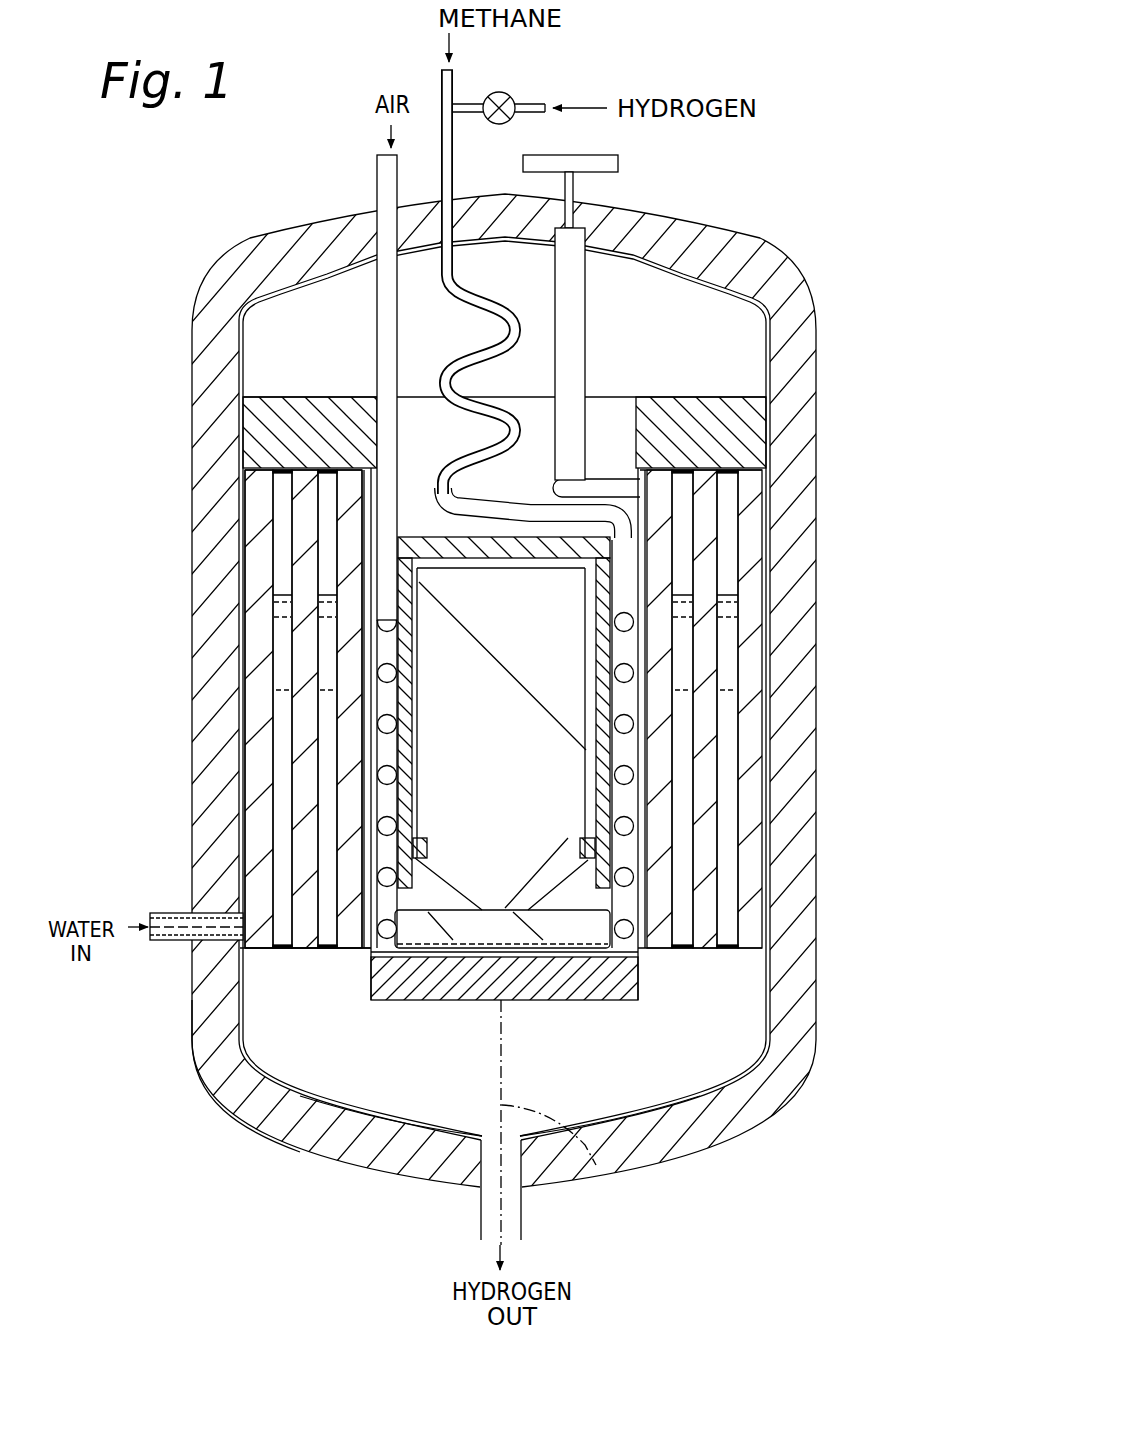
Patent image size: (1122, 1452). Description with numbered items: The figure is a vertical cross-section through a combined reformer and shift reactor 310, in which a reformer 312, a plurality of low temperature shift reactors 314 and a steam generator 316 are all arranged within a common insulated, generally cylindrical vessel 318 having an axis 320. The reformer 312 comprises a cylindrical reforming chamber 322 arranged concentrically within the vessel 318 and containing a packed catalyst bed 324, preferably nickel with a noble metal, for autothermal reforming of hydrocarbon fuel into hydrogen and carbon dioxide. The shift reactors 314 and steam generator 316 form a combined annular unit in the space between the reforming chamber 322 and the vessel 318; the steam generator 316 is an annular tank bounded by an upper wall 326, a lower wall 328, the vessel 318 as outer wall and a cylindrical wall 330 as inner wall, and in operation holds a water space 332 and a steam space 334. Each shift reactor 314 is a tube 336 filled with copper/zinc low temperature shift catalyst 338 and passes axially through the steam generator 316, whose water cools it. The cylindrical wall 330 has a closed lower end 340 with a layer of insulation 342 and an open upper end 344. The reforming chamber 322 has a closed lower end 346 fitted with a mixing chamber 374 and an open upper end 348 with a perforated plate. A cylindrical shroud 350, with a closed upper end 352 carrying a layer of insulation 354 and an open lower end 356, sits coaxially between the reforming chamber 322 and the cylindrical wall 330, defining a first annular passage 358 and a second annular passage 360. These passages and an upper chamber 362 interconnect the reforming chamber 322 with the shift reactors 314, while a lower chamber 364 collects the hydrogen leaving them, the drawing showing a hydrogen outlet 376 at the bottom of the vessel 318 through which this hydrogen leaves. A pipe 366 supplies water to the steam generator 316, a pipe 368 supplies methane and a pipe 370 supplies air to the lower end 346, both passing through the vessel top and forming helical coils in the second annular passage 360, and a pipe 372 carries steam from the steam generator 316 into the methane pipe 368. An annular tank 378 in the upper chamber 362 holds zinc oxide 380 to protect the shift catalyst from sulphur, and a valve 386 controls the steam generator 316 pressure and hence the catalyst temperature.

The combined reformer and shift reactor 310 is at (748, 212).
The reformer 312 is at (592, 808).
The low temperature shift reactors 314 is at (762, 835).
The steam generator 316 is at (732, 900).
The vessel 318 is at (816, 1013).
The axis 320 is at (572, 1160).
The reforming chamber 322 is at (585, 755).
The packed catalyst bed 324 is at (545, 830).
The upper wall 326 is at (243, 482).
The lower wall 328 is at (237, 970).
The cylindrical wall 330 is at (393, 983).
The water space 332 is at (280, 818).
The steam space 334 is at (280, 568).
The tube 336 is at (330, 738).
The low temperature shift reaction catalyst 338 is at (343, 672).
The lower end of the cylindrical wall 340 is at (287, 1134).
The layer of insulation 342 is at (221, 1102).
The upper end of the cylindrical wall 344 is at (660, 470).
The lower end of the reforming chamber 346 is at (447, 937).
The upper end of the reforming chamber 348 is at (637, 487).
The cylindrical shroud 350 is at (603, 607).
The upper end of the shroud 352 is at (414, 535).
The layer of insulation 354 is at (457, 543).
The lower end of the shroud 356 is at (647, 952).
The first annular passage 358 is at (594, 698).
The second annular passage 360 is at (623, 652).
The upper chamber 362 is at (504, 344).
The lower chamber 364 is at (500, 1087).
The pipe 366 is at (175, 913).
The pipe 368 is at (453, 162).
The pipe 370 is at (378, 158).
The pipe 372 is at (742, 398).
The mixing chamber 374 is at (497, 927).
The hydrogen outlet tube 376 is at (522, 1233).
The annular tank 378 is at (197, 347).
The zinc oxide 380 is at (288, 400).
The valve 386 is at (585, 253).